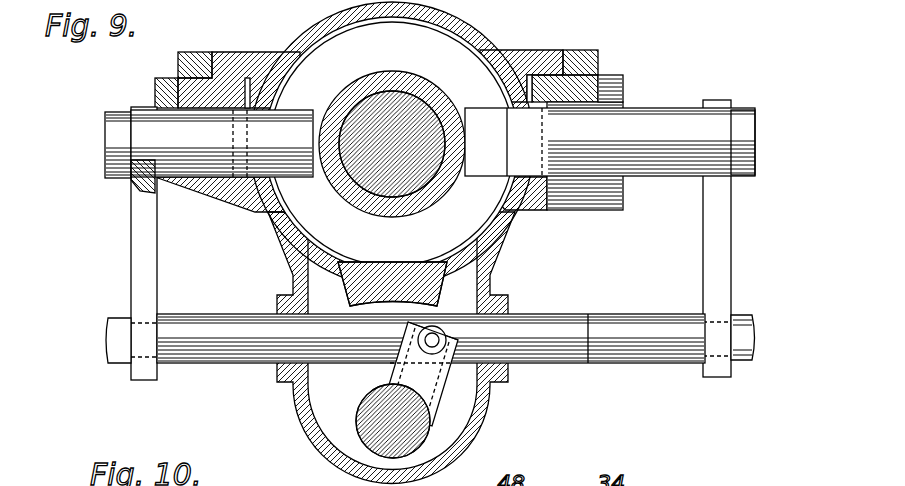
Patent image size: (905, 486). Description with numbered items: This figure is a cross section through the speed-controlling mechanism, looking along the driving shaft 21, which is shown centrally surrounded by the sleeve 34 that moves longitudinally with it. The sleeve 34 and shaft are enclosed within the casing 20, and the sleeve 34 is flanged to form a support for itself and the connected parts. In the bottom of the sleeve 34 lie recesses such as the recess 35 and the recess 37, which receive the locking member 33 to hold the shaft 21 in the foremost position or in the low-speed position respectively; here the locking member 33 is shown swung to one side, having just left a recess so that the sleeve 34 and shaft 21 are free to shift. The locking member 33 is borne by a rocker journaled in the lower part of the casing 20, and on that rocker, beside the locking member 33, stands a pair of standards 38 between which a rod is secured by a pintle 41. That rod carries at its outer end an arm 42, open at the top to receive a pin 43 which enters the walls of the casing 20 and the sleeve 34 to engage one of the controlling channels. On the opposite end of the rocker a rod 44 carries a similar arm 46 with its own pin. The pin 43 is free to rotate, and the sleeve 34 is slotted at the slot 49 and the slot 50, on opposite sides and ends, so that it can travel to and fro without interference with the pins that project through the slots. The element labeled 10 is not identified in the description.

The rod 10 is at (405, 338).
The casing 20 is at (599, 61).
The driving shaft 21 is at (436, 153).
The locking member 33 is at (447, 312).
The sleeve 34 is at (296, 225).
The recess 35 is at (388, 287).
The recess 37 is at (393, 421).
The standards 38 is at (385, 370).
The pintle 41 is at (446, 332).
The arm 42 is at (140, 263).
The pin 43 is at (209, 151).
The rod 44 is at (660, 358).
The arm 46 is at (706, 255).
The slot 49 is at (254, 213).
The slot 50 is at (513, 129).